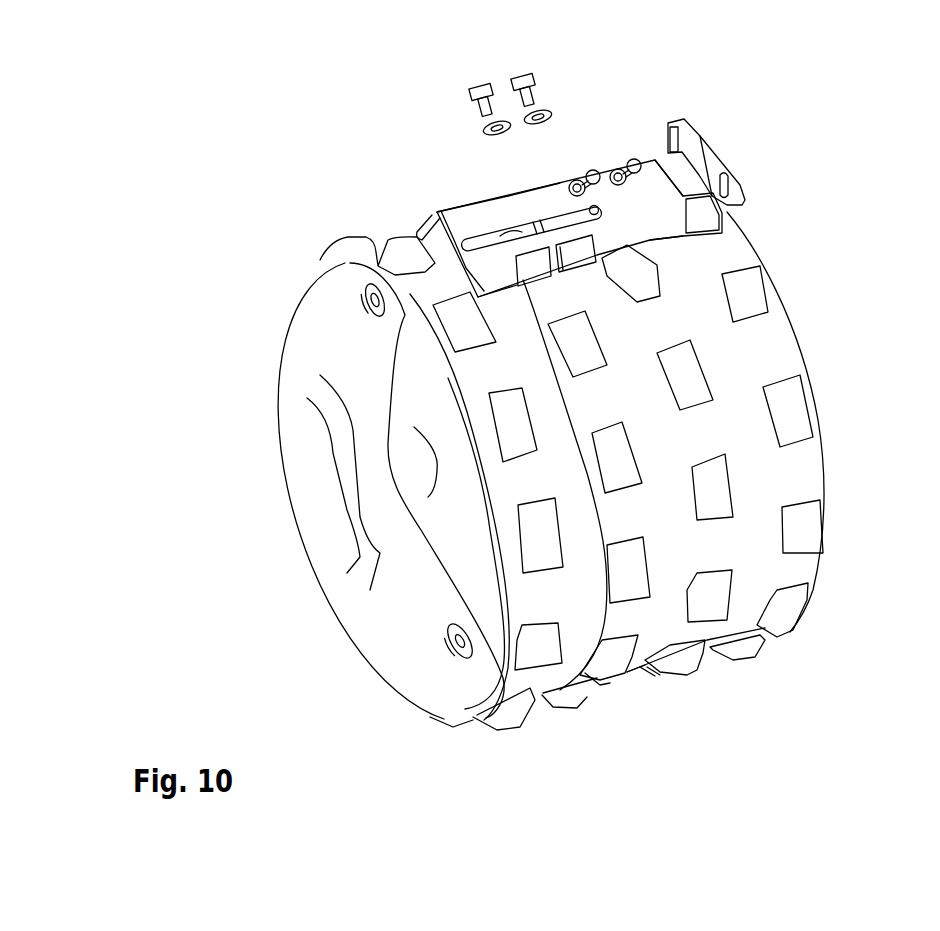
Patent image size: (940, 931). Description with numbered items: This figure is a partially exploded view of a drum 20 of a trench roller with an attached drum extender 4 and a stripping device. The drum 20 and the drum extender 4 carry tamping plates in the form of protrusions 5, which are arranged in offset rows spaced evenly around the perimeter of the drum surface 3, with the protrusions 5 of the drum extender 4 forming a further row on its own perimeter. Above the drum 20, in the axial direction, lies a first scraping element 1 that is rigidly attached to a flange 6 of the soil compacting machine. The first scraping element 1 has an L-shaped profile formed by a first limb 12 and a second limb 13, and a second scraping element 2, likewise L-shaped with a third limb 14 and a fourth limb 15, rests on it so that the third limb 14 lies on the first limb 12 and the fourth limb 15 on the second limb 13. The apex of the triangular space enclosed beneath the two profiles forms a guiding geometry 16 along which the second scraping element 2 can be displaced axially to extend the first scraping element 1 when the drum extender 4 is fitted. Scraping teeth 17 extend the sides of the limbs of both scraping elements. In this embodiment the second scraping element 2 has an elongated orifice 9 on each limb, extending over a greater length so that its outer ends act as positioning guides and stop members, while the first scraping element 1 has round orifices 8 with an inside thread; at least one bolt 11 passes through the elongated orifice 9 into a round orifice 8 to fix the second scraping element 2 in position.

The first scraping element 1 is at (690, 168).
The second scraping element 2 is at (457, 214).
The drum surface 3 is at (737, 258).
The drum extender 4 is at (340, 263).
The protrusions 5 is at (400, 257).
The flange 6 is at (725, 160).
The round orifices 8 is at (599, 212).
The elongated orifice 9 is at (525, 227).
The bolt 11 is at (530, 75).
The first limb 12 is at (652, 178).
The second limb 13 is at (654, 178).
The third limb 14 is at (508, 205).
The fourth limb 15 is at (515, 187).
The guiding geometry 16 is at (437, 212).
The scraping teeth 17 is at (663, 218).
The drum 20 is at (240, 140).